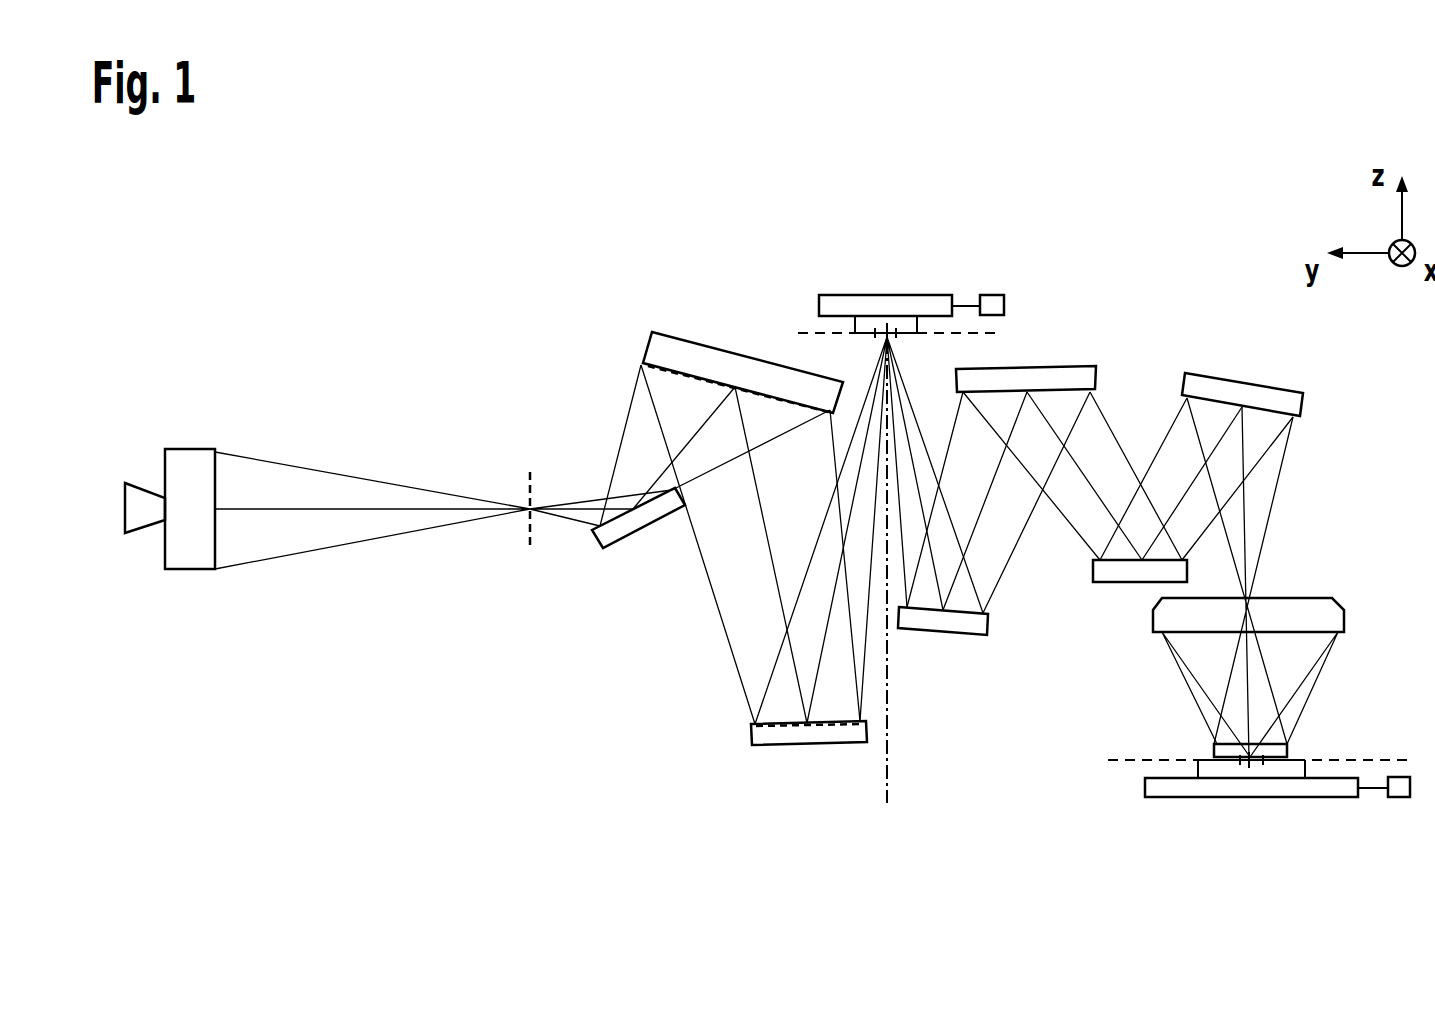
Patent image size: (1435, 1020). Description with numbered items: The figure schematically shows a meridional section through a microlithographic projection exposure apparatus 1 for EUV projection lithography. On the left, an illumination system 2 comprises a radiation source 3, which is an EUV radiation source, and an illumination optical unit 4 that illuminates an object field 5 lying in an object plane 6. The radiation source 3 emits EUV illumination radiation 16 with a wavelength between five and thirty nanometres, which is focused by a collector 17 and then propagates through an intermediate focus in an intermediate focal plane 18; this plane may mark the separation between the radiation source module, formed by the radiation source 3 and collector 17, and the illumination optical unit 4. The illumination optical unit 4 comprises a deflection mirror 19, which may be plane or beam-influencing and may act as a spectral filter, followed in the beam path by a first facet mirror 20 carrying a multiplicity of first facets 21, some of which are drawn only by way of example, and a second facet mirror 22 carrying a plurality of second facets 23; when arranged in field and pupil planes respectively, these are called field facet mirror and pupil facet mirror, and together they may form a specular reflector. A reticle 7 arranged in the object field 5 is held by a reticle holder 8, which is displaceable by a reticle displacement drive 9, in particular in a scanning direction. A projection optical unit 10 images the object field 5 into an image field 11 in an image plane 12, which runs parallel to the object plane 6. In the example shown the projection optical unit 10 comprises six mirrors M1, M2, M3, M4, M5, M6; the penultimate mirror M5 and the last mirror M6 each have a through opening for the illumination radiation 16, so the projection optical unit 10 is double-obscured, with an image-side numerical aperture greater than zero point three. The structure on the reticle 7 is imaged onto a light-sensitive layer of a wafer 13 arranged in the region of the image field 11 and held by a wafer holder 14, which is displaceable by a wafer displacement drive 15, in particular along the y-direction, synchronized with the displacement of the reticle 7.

The projection exposure apparatus 1 is at (372, 276).
The illumination system 2 is at (526, 314).
The radiation source 3 is at (142, 520).
The illumination optical unit 4 is at (684, 628).
The object field 5 is at (877, 335).
The object plane 6 is at (798, 333).
The reticle 7 is at (905, 323).
The reticle holder 8 is at (866, 300).
The reticle displacement drive 9 is at (991, 297).
The projection optical unit 10 is at (1317, 522).
The image field 11 is at (1240, 760).
The image plane 12 is at (1145, 762).
The wafer 13 is at (1208, 772).
The wafer holder 14 is at (1327, 790).
The wafer displacement drive 15 is at (1402, 790).
The illumination radiation 16 is at (313, 551).
The collector 17 is at (198, 562).
The intermediate focal plane 18 is at (527, 541).
The deflection mirror 19 is at (633, 520).
The first facet mirror 20 is at (681, 338).
The first facets 21 is at (665, 382).
The second facet mirror 22 is at (815, 745).
The second facets 23 is at (773, 722).
The mirror M1 is at (943, 638).
The mirror M2 is at (1026, 362).
The mirror M3 is at (1140, 590).
The mirror M4 is at (1242, 380).
The penultimate mirror M5 is at (1275, 742).
The last mirror M6 is at (1248, 595).